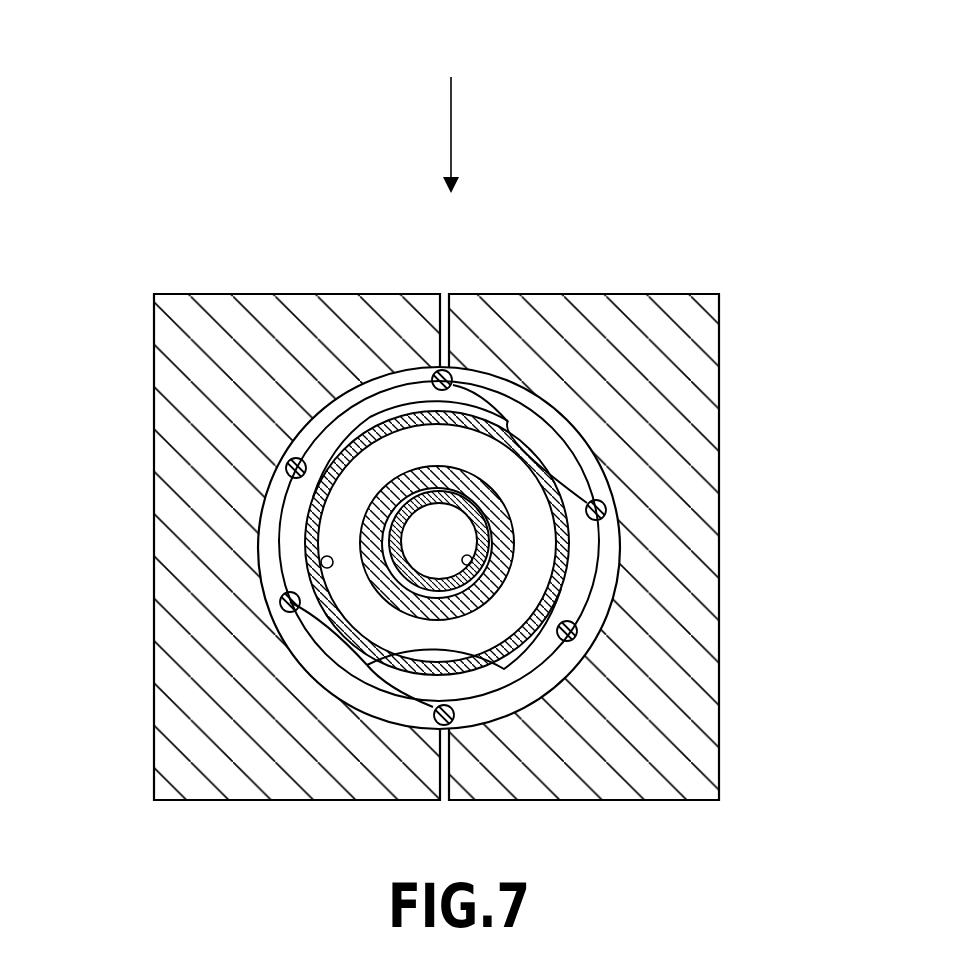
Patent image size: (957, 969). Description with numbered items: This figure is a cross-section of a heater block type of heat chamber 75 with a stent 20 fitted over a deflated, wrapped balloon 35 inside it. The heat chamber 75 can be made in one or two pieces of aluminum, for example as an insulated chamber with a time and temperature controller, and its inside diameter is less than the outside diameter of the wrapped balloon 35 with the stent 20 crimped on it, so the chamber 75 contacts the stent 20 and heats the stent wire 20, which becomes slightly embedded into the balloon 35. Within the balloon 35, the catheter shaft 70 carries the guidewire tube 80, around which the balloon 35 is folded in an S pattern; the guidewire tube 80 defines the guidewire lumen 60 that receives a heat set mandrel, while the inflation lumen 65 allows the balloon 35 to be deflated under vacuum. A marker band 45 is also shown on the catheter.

The heat chamber 75 is at (449, 118).
The balloon 35 is at (352, 416).
The stent 20 is at (286, 466).
The shaft 70 is at (312, 528).
The inflation lumen 65 is at (331, 568).
The marker band 45 is at (412, 604).
The guidewire tube 80 is at (487, 532).
The guidewire lumen 60 is at (472, 568).